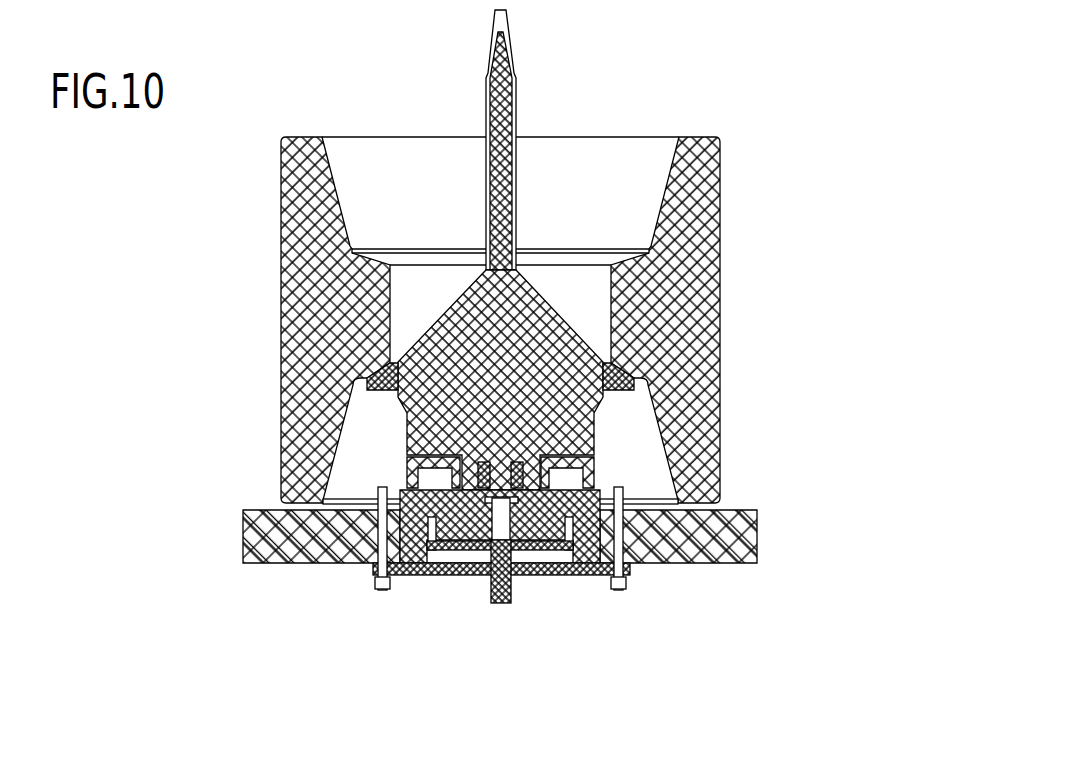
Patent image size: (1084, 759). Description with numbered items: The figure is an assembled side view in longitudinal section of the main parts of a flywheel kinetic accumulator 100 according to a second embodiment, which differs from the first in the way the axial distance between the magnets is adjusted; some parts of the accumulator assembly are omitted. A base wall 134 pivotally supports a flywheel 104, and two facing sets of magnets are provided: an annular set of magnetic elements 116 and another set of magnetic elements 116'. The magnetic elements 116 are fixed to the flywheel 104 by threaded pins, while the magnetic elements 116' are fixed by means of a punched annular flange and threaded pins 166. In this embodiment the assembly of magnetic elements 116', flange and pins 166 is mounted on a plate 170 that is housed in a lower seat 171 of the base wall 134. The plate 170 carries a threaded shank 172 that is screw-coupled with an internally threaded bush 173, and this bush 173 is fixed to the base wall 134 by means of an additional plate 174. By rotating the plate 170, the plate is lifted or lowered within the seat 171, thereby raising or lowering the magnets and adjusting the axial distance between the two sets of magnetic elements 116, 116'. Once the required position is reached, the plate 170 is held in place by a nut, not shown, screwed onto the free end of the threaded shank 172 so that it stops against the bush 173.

The flywheel kinetic accumulator 100 is at (770, 80).
The flywheel 104 is at (706, 202).
The magnetic elements 116 is at (496, 473).
The magnetic elements 116' is at (512, 415).
The base wall 134 is at (757, 552).
The threaded pins 166 is at (397, 513).
The plate 170 is at (543, 550).
The lower seat 171 is at (380, 580).
The threaded shank 172 is at (493, 547).
The internally threaded bush 173 is at (497, 595).
The additional plate 174 is at (410, 573).